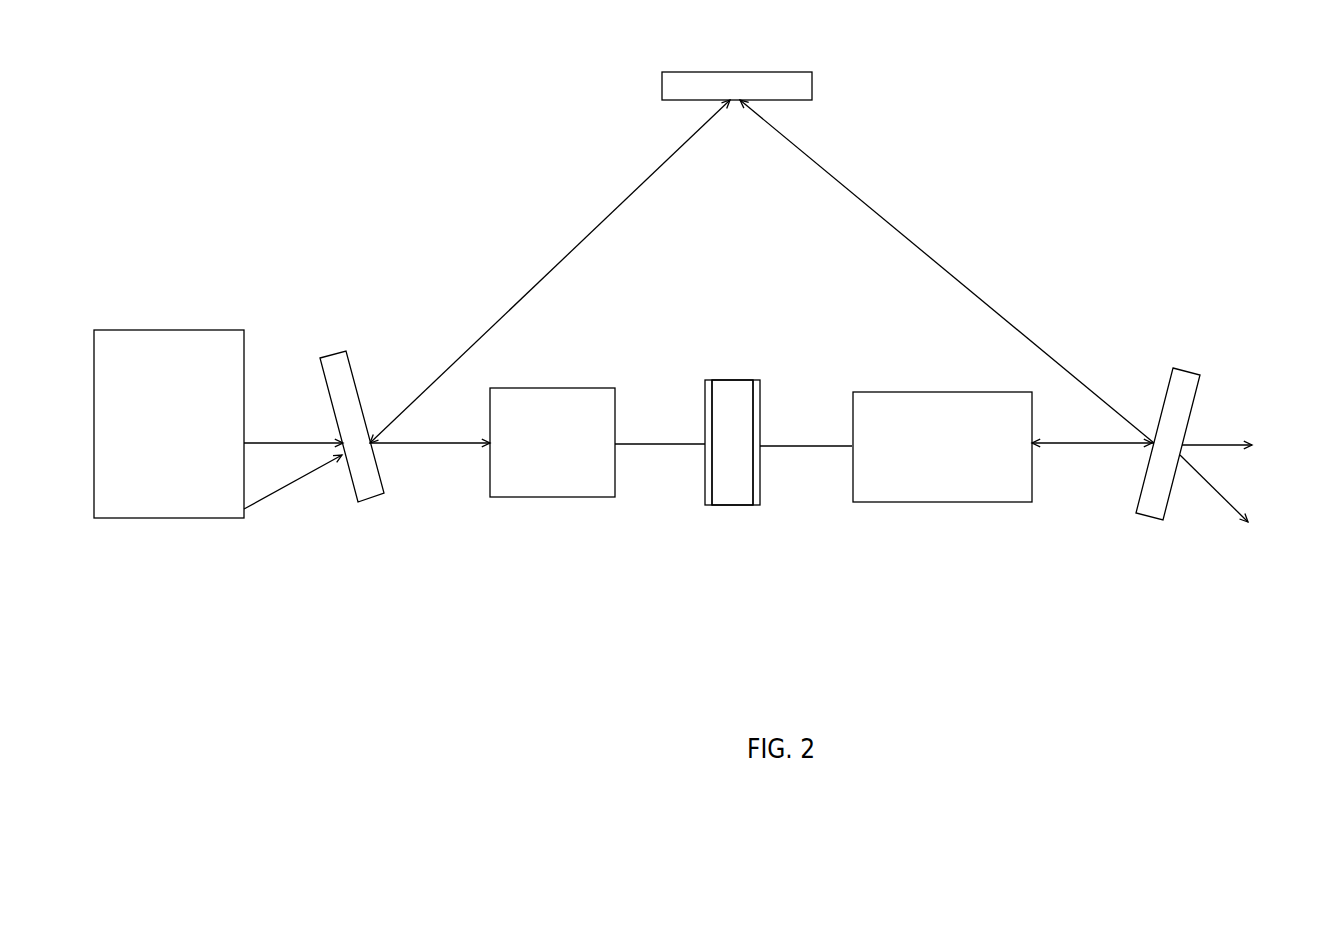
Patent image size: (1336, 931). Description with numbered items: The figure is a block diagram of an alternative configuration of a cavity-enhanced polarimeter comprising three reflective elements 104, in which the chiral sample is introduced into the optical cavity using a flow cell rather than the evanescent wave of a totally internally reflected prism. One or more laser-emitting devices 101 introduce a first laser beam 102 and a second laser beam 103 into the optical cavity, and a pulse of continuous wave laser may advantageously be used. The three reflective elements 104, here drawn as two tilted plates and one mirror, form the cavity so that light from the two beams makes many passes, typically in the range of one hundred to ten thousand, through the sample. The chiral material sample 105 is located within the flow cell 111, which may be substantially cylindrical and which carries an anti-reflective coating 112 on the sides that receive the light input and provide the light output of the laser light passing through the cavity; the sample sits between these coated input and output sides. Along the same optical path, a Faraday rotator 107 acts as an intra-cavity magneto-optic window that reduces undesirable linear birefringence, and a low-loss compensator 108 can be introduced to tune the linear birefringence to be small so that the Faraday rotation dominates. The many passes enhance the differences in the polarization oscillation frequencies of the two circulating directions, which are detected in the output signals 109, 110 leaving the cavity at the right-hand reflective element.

The laser-emitting device 101 is at (150, 481).
The first laser beam 102 is at (292, 372).
The second laser beam 103 is at (302, 585).
The reflective element 104 is at (350, 358).
The chiral material sample 105 is at (734, 448).
The Faraday rotator 107 is at (532, 484).
The compensator 108 is at (923, 487).
The output signal 109 is at (1277, 397).
The output signal 110 is at (1290, 563).
The flow cell 111 is at (732, 392).
The anti-reflective coating 112 is at (708, 483).